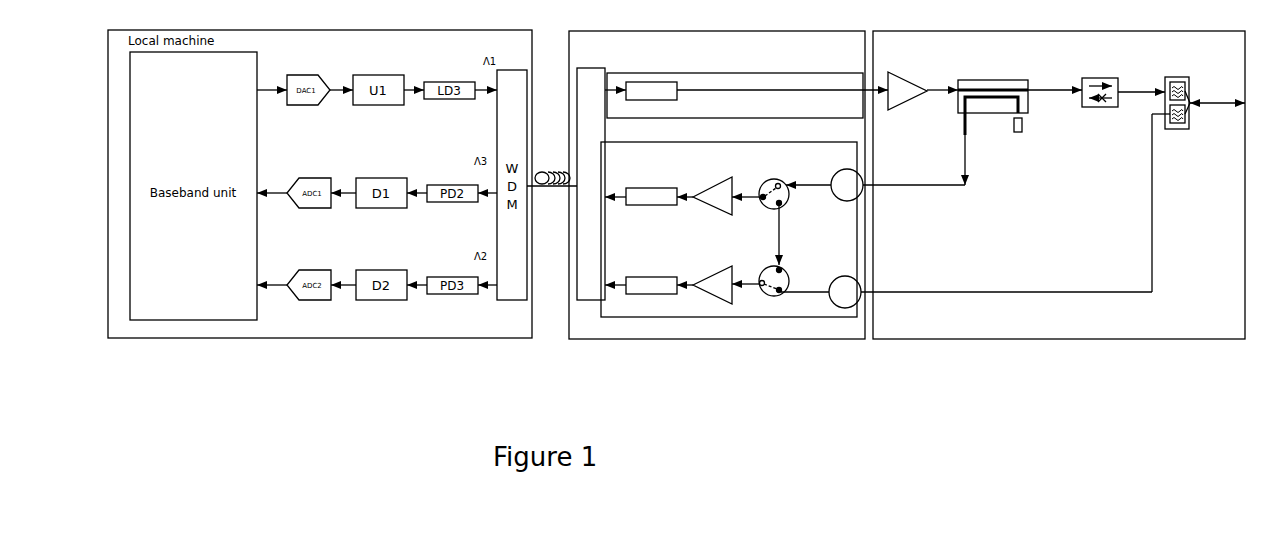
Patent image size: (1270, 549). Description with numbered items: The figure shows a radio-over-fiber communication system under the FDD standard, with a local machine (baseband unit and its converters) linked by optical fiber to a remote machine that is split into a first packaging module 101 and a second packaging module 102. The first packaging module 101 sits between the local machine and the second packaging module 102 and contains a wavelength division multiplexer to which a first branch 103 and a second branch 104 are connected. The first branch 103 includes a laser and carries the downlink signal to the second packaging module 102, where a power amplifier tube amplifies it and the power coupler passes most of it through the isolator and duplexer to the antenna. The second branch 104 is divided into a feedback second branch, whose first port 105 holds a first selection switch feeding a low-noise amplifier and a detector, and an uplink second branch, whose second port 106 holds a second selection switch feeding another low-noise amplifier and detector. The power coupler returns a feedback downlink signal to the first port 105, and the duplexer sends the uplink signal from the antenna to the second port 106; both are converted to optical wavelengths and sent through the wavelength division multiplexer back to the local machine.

The first packaging module 101 is at (728, 186).
The second packaging module 102 is at (1053, 185).
The first branch 103 is at (766, 73).
The second branch 104 is at (811, 317).
The first port 105 is at (824, 185).
The second port 106 is at (821, 292).